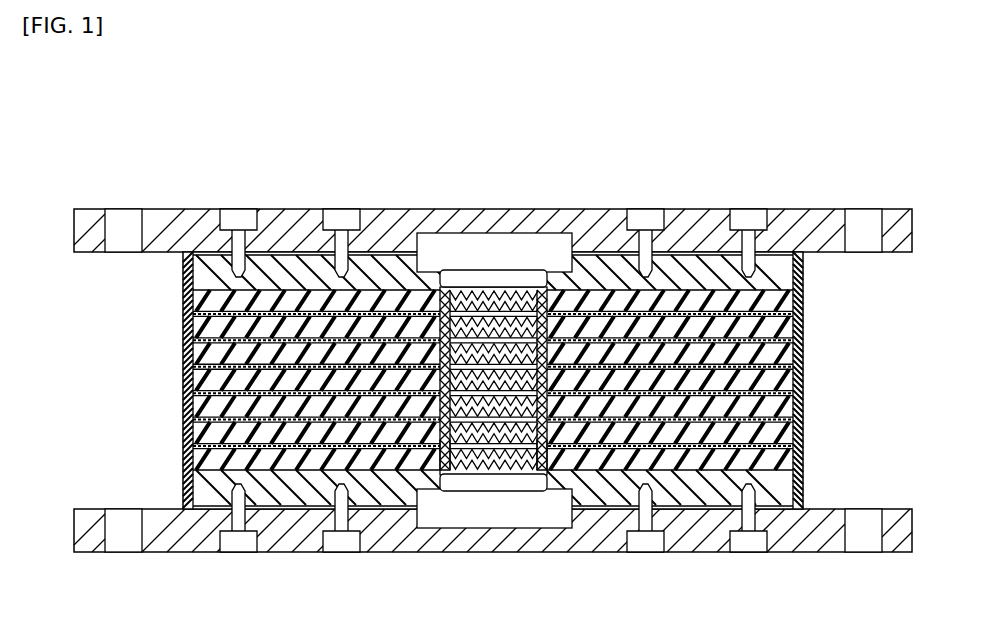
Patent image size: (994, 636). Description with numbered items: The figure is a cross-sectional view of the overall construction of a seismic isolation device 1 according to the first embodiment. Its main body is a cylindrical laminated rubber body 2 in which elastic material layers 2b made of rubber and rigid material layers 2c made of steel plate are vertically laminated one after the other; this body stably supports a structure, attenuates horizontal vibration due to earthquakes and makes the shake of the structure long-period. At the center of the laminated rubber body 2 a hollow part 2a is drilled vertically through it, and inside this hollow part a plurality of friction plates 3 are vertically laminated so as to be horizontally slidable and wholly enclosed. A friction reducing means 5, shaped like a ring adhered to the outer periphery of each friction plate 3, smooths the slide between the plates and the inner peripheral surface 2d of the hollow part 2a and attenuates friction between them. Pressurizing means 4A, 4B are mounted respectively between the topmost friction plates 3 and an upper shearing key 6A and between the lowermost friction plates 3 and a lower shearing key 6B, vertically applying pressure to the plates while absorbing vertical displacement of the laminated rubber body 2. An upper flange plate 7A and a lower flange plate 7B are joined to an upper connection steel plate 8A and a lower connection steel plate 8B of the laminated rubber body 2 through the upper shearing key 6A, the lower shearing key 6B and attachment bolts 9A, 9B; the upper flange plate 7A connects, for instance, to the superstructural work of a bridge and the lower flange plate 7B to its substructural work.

The seismic isolation device 1 is at (510, 138).
The laminated rubber body 2 is at (547, 331).
The hollow part 2a is at (547, 482).
The elastic material layers 2b is at (790, 365).
The rigid material layers 2c is at (790, 408).
The inner peripheral surface 2d is at (465, 470).
The friction plates 3 is at (505, 300).
The pressurizing means 4A is at (475, 278).
The pressurizing means 4B is at (510, 483).
The friction reducing means 5 is at (565, 300).
The upper shearing key 6A is at (440, 243).
The lower shearing key 6B is at (432, 517).
The upper flange plate 7A is at (803, 211).
The lower flange plate 7B is at (790, 553).
The upper connection steel plate 8A is at (697, 275).
The lower connection steel plate 8B is at (688, 500).
The attachment bolts 9A is at (648, 222).
The attachment bolts 9B is at (642, 545).